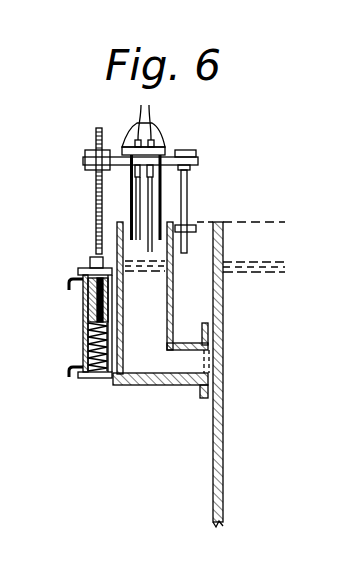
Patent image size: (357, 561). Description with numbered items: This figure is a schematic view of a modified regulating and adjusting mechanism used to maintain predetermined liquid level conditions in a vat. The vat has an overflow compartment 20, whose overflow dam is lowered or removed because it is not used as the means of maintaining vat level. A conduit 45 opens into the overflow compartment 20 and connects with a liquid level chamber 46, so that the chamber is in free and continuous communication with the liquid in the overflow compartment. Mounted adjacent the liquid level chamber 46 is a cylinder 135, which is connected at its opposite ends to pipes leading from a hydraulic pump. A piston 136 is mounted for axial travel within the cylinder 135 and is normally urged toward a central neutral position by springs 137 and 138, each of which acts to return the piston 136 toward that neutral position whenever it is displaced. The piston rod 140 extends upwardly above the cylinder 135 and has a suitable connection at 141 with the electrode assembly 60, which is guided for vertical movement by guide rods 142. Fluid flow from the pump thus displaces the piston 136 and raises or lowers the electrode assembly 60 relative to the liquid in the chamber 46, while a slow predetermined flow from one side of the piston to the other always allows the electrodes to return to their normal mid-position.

The overflow compartment 20 is at (223, 425).
The conduit 45 is at (178, 382).
The liquid level chamber 46 is at (157, 297).
The electrode assembly 60 is at (165, 150).
The cylinder 135 is at (90, 345).
The piston 136 is at (97, 320).
The spring 137 is at (100, 378).
The spring 138 is at (88, 305).
The piston rod 140 is at (95, 210).
The connection 141 is at (95, 150).
The guide rods 142 is at (188, 187).